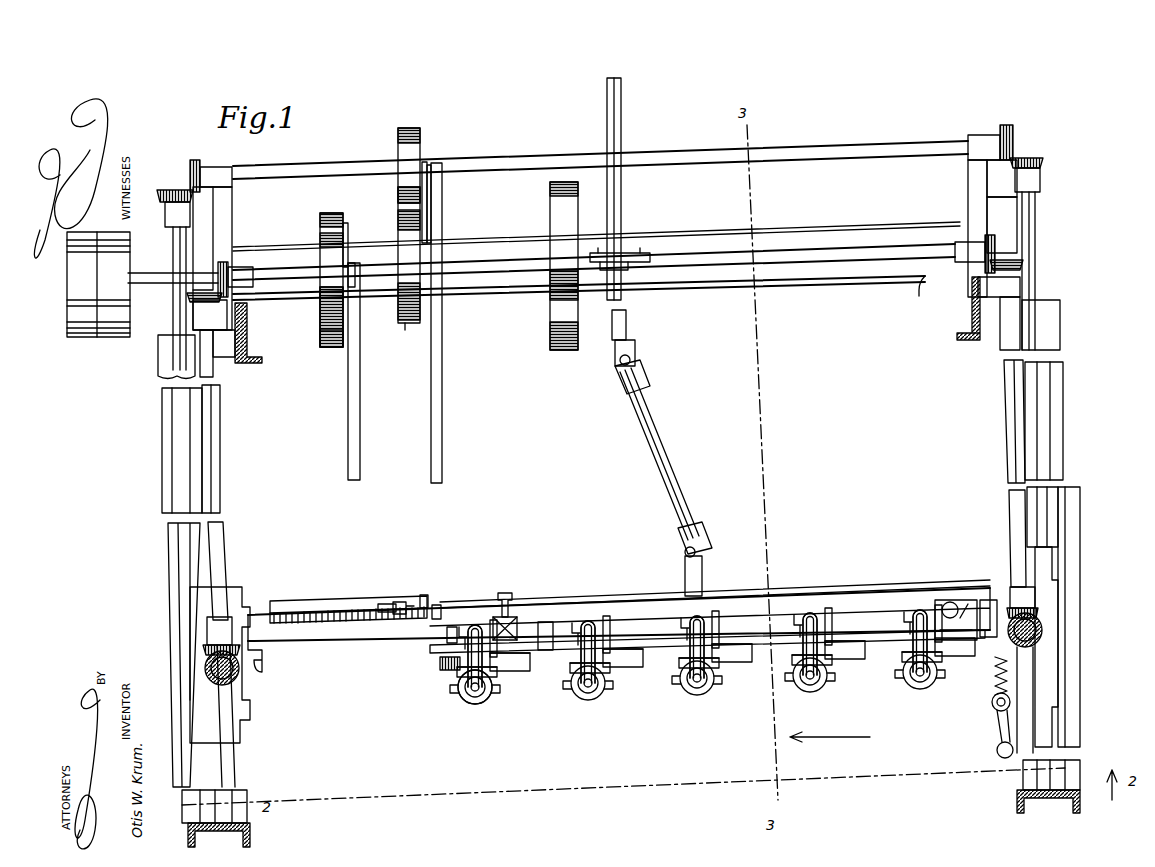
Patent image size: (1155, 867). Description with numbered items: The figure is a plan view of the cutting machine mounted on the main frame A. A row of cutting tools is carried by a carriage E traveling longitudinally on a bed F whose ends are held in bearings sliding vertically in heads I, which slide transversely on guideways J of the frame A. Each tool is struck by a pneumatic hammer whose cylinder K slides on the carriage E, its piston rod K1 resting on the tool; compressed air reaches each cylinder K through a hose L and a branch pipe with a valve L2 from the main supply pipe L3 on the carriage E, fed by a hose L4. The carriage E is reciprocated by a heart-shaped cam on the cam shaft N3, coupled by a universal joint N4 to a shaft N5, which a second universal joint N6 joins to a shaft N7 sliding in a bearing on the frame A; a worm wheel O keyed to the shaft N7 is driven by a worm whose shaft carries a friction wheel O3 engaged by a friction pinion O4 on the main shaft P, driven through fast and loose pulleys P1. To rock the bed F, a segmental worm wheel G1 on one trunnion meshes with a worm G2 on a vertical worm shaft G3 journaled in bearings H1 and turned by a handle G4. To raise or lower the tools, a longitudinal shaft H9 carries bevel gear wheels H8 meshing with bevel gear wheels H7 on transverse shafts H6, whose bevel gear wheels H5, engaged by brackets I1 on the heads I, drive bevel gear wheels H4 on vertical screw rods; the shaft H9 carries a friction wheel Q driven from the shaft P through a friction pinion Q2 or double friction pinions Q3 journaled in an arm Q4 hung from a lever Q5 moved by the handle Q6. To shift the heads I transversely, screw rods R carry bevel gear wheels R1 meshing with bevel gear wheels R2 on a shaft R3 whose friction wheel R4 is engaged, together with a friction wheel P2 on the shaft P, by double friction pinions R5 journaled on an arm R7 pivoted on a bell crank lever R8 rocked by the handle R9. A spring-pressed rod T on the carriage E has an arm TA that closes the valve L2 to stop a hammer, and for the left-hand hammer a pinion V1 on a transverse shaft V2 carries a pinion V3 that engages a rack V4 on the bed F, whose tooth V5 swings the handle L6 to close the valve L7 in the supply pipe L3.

The transverse screw rods R is at (173, 240).
The bevel gear wheels R1 is at (175, 190).
The bevel gear wheels R2 is at (197, 162).
The longitudinal shaft R3 is at (905, 152).
The friction wheel R4 is at (420, 135).
The double friction pinions R5 is at (398, 196).
The arm R7 is at (430, 198).
The bell crank lever R8 is at (432, 220).
The handle R9 is at (442, 350).
The friction wheel Q is at (320, 263).
The friction pinion Q2 is at (320, 340).
The double friction pinions Q3 is at (320, 220).
The arm Q4 is at (350, 250).
The lever Q5 is at (355, 264).
The handle Q6 is at (360, 408).
The main shaft P is at (160, 275).
The fast and loose pulleys P1 is at (88, 337).
The friction wheel P2 is at (405, 322).
The worm wheel O is at (640, 250).
The friction wheel O3 is at (550, 220).
The friction pinion O4 is at (550, 252).
The bearings H1 is at (187, 297).
The bevel gear wheels H4 is at (205, 680).
The bevel gear wheels H5 is at (203, 648).
The transversely extending shafts H6 is at (221, 468).
The bevel gear wheels H7 is at (1022, 262).
The bevel gear wheels H8 is at (218, 268).
The longitudinally extending shaft H9 is at (497, 266).
The cam shaft N3 is at (685, 590).
The universal joint N4 is at (706, 553).
The shaft N5 is at (678, 486).
The universal joint N6 is at (635, 356).
The shaft N7 is at (621, 203).
The main frame A is at (247, 337).
The heads I is at (190, 628).
The brackets I1 is at (240, 615).
The guideways J is at (185, 557).
The bed F is at (348, 641).
The carriage E is at (430, 648).
The cylinders K is at (590, 702).
The piston rod K1 is at (480, 708).
The hose L is at (484, 696).
The valve L2 is at (476, 626).
The main supply pipe L3 is at (630, 606).
The hose L4 is at (953, 602).
The handle L6 is at (510, 590).
The valve L7 is at (515, 617).
The rod T is at (965, 628).
The arm TA is at (522, 670).
The pinion V1 is at (440, 670).
The shaft V2 is at (447, 633).
The pinion V3 is at (440, 606).
The rack V4 is at (318, 607).
The tooth V5 is at (426, 594).
The segmental worm wheel G1 is at (995, 677).
The worm G2 is at (992, 700).
The worm shaft G3 is at (998, 720).
The handle G4 is at (997, 746).